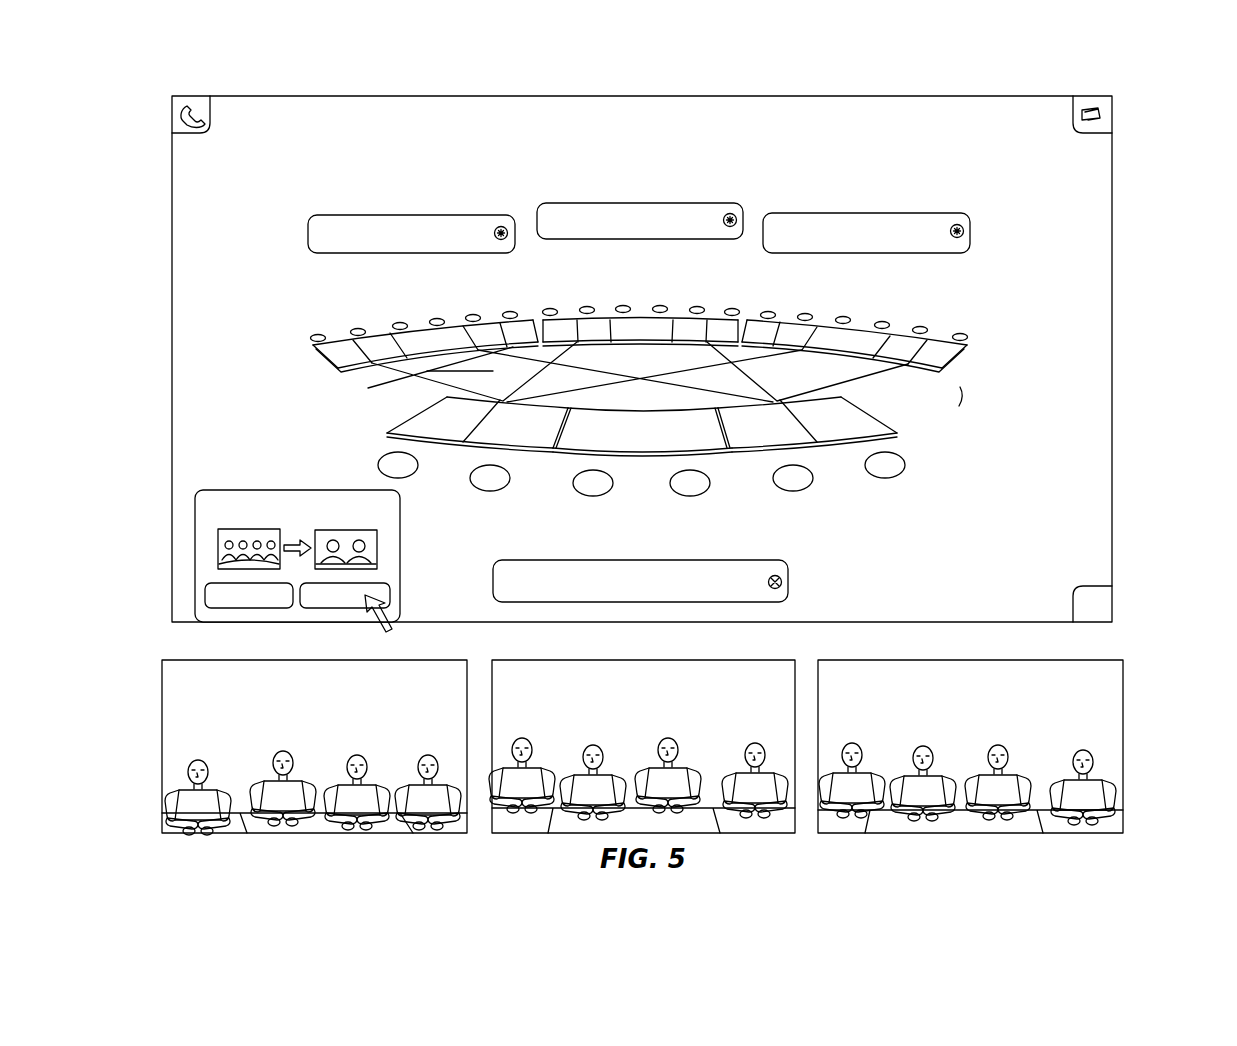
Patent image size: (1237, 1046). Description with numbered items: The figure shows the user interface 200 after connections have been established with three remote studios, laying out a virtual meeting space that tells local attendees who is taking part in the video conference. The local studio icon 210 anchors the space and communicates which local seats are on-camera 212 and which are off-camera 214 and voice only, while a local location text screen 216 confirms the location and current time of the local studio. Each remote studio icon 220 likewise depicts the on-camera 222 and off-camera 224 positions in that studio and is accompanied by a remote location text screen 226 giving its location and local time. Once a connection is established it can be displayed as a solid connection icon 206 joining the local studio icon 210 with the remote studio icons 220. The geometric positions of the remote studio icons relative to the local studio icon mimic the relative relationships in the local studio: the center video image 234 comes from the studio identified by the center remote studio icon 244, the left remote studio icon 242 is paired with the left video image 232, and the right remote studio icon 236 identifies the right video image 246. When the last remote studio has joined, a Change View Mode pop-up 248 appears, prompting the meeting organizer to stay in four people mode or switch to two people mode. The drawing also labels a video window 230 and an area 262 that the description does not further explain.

The user interface 200 is at (893, 80).
The solid connection icon 206 is at (368, 388).
The local studio icon 210 is at (500, 432).
The on-camera position 212 is at (773, 425).
The off-camera position 214 is at (843, 424).
The local location text screen 216 is at (673, 582).
The remote studio icon 220 is at (398, 321).
The on-camera position 222 is at (879, 319).
The off-camera position 224 is at (629, 301).
The remote location text screen 226 is at (453, 228).
The video window 230 is at (268, 747).
The left video image 232 is at (320, 721).
The center video image 234 is at (608, 720).
The right remote studio icon 236 is at (953, 732).
The left remote studio icon 242 is at (453, 333).
The center remote studio icon 244 is at (640, 330).
The right video image 246 is at (863, 340).
The Change View Mode pop-up 248 is at (300, 571).
The empty seat area 262 is at (962, 398).